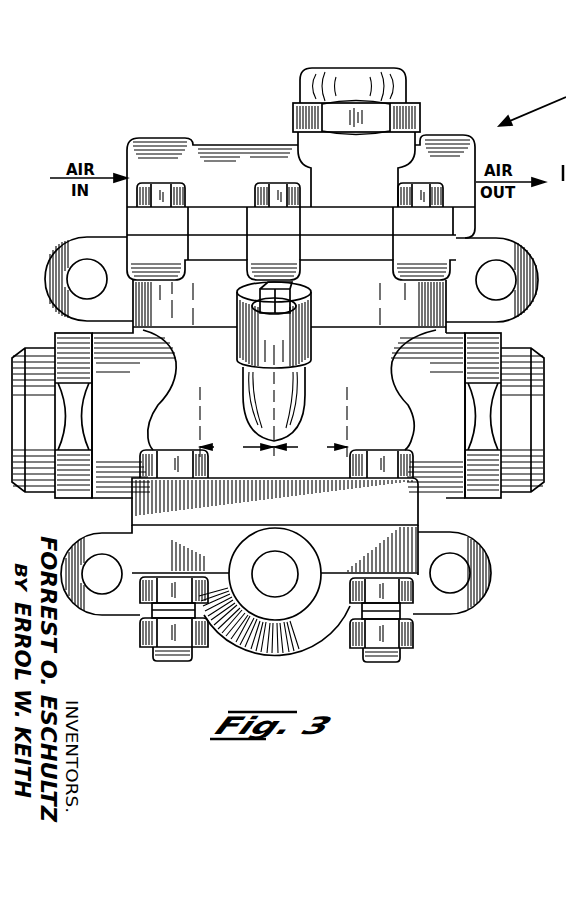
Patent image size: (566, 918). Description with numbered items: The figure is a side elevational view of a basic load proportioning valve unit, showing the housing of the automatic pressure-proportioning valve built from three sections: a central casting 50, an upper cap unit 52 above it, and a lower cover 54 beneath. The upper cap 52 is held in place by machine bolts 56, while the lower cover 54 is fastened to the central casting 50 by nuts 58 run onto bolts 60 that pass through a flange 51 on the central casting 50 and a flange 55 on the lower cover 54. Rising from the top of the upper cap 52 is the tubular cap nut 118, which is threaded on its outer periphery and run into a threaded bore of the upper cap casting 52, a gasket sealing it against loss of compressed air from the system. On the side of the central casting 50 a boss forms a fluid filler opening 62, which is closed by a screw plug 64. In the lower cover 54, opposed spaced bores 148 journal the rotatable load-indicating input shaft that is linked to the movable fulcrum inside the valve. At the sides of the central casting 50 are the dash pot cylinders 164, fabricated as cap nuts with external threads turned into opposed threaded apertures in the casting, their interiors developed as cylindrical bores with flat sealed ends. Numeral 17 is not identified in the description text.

The tubular cap nut 118 is at (421, 120).
The upper cap unit 52 is at (241, 146).
The machine bolts 56 is at (426, 186).
The central casting 50 is at (447, 314).
The fluid filler opening 62 is at (246, 343).
The screw plug 64 is at (291, 295).
The flange 51 is at (412, 491).
The lower cover 54 is at (244, 656).
The opposed spaced bores 148 is at (302, 561).
The flange 55 is at (410, 557).
The nuts 58 is at (142, 619).
The bolts 60 is at (160, 661).
The dash pot cylinders 164 is at (543, 463).
The conduit 17 is at (556, 523).